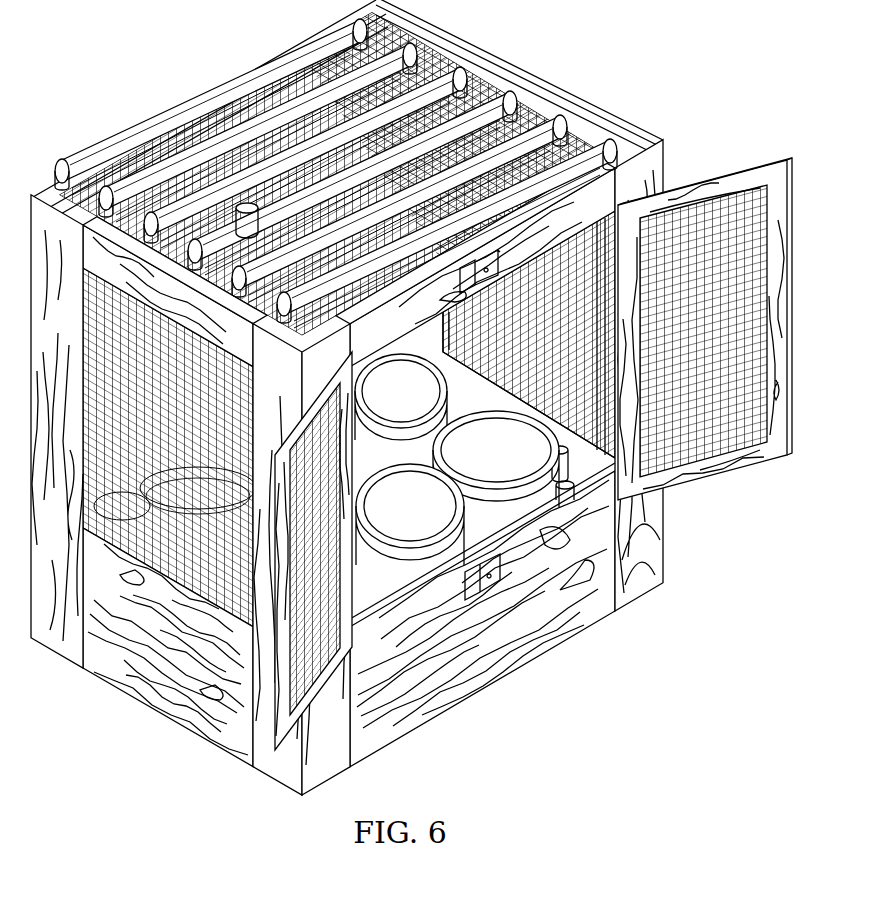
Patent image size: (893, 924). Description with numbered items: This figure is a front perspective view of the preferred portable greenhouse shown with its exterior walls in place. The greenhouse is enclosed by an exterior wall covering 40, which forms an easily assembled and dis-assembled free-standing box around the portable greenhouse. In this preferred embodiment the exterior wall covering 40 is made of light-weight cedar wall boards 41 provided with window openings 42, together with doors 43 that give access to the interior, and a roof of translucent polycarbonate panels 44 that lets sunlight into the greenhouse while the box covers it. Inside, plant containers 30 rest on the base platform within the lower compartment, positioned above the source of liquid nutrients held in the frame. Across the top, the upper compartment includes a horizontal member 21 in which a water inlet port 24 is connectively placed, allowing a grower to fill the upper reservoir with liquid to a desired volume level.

The horizontal member 21 is at (262, 108).
The water inlet port 24 is at (245, 207).
The plant container 30 is at (440, 452).
The exterior wall covering 40 is at (484, 676).
The cedar wall board 41 is at (660, 546).
The window opening 42 is at (188, 586).
The door 43 is at (728, 174).
The translucent polycarbonate panel 44 is at (494, 54).